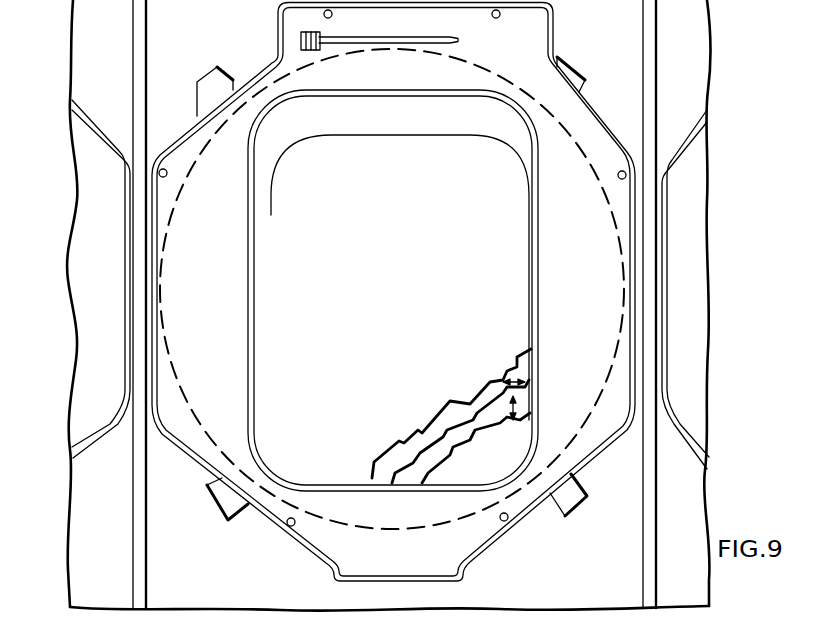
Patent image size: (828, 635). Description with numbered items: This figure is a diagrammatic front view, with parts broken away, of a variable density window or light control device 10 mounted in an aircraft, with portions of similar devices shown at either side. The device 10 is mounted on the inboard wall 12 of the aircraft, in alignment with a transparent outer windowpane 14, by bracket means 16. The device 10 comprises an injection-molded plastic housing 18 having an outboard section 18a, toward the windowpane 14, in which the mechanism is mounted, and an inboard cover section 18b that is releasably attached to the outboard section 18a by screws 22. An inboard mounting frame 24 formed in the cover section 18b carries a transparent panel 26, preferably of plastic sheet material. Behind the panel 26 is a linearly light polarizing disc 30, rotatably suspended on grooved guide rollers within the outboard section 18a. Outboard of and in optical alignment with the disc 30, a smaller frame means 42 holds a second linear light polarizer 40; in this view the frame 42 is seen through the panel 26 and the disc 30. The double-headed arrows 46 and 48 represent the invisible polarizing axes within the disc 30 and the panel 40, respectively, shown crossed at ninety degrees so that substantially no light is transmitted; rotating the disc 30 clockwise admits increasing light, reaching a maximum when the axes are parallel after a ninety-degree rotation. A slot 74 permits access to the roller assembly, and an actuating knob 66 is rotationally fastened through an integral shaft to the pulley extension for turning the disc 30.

The light control device 10 is at (614, 88).
The inboard wall 12 is at (112, 13).
The transparent outer windowpane 14 is at (500, 472).
The bracket means 16 is at (578, 511).
The housing 18 is at (268, 530).
The outboard section 18a is at (214, 487).
The cover section 18b is at (207, 456).
The screws 22 is at (168, 173).
The inboard mounting frame 24 is at (528, 248).
The transparent panel 26 is at (390, 260).
The linearly light polarizing disc 30 is at (610, 371).
The second linear light polarizer 40 is at (413, 475).
The frame means 42 is at (359, 137).
The double-headed arrow 46 is at (509, 378).
The double-headed arrow 48 is at (529, 421).
The actuating knob 66 is at (321, 49).
The slot 74 is at (363, 40).